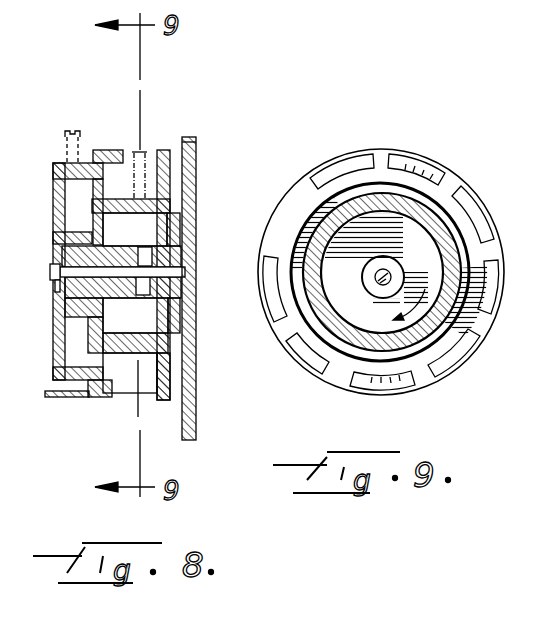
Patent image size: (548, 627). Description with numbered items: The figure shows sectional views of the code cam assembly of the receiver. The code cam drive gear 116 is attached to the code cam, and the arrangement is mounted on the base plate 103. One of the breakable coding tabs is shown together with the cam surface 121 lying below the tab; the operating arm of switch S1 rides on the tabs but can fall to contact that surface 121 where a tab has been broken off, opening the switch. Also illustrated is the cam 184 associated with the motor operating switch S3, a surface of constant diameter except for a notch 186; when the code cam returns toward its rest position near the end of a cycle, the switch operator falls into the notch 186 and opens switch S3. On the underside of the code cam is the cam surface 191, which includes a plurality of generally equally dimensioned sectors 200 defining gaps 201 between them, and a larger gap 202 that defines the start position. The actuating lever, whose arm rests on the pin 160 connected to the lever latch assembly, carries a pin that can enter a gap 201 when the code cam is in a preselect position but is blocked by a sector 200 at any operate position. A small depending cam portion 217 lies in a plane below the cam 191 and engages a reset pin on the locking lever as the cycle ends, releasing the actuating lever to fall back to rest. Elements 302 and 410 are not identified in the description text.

In FIG. 8, the base plate 103 is at (197, 160).
In FIG. 8, the code cam drive gear 116 is at (163, 150).
In FIG. 8, the cam surface 121 is at (65, 163).
In FIG. 8, the pin 160 is at (0, 476).
In FIG. 8, the cam surface 184 is at (58, 185).
In FIG. 9, the cam surface 184 is at (298, 223).
In FIG. 8, the notch 186 is at (113, 192).
In FIG. 9, the notch 186 is at (320, 207).
In FIG. 8, the cam surface 191 is at (110, 410).
In FIG. 9, the cam surface 191 is at (285, 358).
In FIG. 9, the sectors 200 is at (343, 160).
In FIG. 9, the gaps 201 is at (388, 152).
In FIG. 9, the larger gap 202 is at (330, 385).
In FIG. 9, the cam portion 217 is at (268, 290).
In FIG. 8, the retaining flange 302 is at (72, 393).
In FIG. 8, the outer wall 410 is at (52, 357).
In FIG. 8, the switch S1 is at (65, 135).
In FIG. 8, the motor operating switch S3 is at (135, 150).